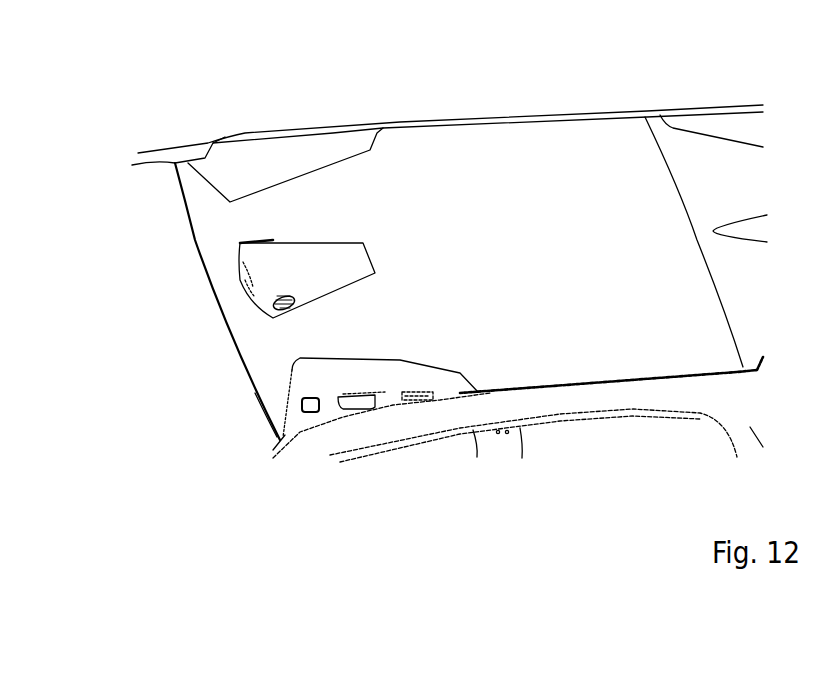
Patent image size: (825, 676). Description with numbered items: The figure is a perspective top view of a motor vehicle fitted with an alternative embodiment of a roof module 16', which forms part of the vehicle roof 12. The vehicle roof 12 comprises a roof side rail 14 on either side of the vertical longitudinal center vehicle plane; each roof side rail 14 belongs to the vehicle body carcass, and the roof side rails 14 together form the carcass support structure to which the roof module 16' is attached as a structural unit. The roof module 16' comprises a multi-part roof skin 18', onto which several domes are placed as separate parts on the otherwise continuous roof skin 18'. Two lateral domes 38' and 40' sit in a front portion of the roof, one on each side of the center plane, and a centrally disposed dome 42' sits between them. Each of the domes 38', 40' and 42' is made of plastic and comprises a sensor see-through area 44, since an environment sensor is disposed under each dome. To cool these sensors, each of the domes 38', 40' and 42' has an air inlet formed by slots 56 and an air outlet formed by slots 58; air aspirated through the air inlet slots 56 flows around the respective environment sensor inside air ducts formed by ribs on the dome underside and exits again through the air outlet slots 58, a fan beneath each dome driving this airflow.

The vehicle roof 12 is at (590, 135).
The roof side rail 14 is at (438, 122).
The roof module 16' is at (621, 207).
The multi-part roof skin 18' is at (388, 335).
The lateral dome 38' is at (285, 134).
The centrally disposed dome 42' is at (241, 274).
The sensor see-through area 44 is at (248, 284).
The lateral dome 40' is at (380, 451).
The air outlet slots 58 is at (307, 408).
The air inlet slots 56 is at (412, 398).